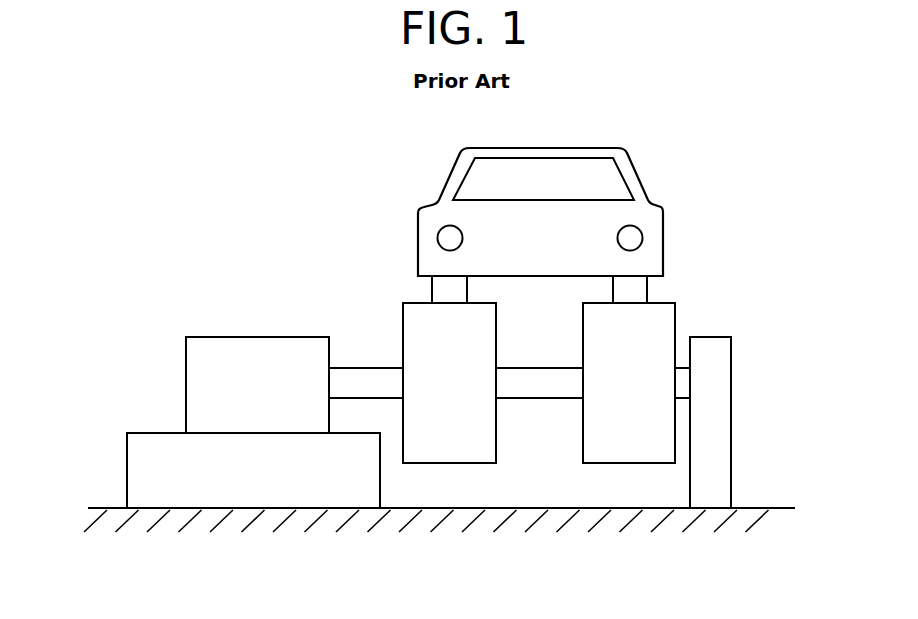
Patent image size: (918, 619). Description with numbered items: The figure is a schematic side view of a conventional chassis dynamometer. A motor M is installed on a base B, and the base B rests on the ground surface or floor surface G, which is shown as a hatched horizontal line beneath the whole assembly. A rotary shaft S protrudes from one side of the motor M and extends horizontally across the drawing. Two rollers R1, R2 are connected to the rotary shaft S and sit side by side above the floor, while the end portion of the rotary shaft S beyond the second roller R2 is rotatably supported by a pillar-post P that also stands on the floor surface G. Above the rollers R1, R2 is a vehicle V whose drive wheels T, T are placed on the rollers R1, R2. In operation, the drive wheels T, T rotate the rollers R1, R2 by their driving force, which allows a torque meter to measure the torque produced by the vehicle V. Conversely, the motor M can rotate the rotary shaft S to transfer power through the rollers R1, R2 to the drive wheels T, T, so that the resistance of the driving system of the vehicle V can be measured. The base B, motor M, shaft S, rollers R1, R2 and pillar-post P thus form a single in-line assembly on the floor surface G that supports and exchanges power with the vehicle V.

The vehicle V is at (566, 148).
The drive wheel T is at (467, 292).
The roller R1 is at (477, 463).
The roller R2 is at (620, 463).
The rotary shaft S is at (362, 368).
The motor M is at (275, 337).
The base B is at (127, 458).
The pillar-post P is at (731, 352).
The ground G is at (439, 520).